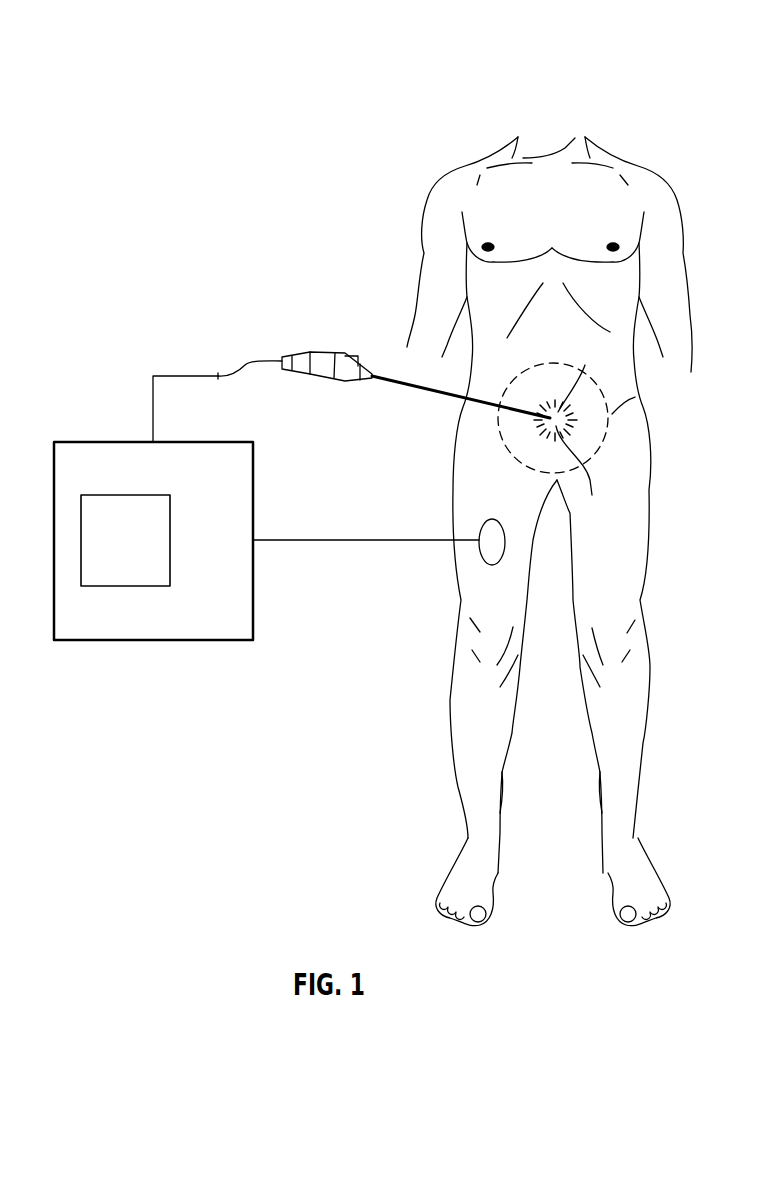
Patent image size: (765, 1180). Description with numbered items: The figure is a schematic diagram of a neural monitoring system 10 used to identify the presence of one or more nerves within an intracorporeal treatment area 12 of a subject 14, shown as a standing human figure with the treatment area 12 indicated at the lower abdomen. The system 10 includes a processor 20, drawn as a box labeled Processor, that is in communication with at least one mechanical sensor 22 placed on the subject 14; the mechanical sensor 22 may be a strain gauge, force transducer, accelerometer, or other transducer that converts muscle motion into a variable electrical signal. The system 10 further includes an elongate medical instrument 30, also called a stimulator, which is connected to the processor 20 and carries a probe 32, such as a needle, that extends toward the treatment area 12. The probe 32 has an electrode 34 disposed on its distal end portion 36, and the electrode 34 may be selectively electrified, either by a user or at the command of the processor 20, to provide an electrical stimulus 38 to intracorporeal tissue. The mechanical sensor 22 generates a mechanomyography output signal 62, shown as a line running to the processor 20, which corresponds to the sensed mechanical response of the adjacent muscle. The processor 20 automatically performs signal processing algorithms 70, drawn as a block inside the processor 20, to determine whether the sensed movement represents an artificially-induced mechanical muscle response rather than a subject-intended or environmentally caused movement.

The neural monitoring system 10 is at (98, 56).
The intracorporeal treatment area 12 is at (634, 399).
The subject 14 is at (648, 173).
The processor 20 is at (105, 439).
The mechanical sensor 22 is at (480, 526).
The elongate medical instrument 30 is at (291, 351).
The probe 32 is at (428, 392).
The electrode 34 is at (585, 365).
The distal end portion 36 is at (543, 449).
The electrical stimulus 38 is at (581, 476).
The MMG output signal 62 is at (353, 538).
The signal processing algorithms 70 is at (127, 494).